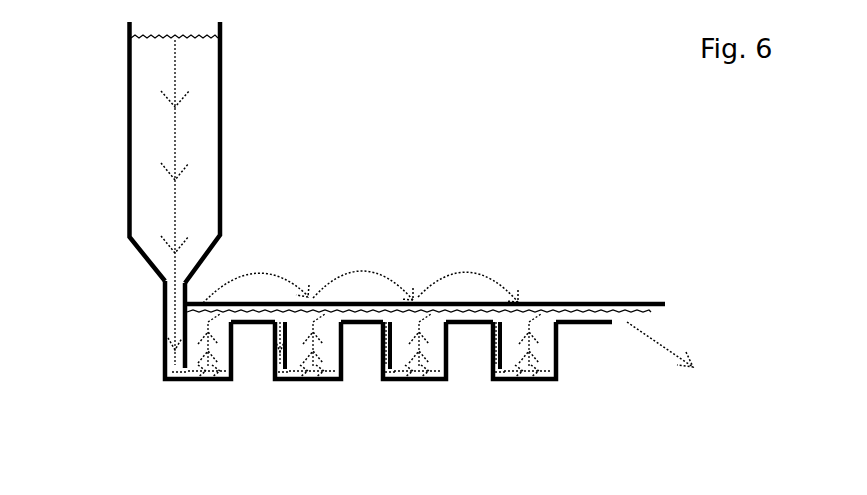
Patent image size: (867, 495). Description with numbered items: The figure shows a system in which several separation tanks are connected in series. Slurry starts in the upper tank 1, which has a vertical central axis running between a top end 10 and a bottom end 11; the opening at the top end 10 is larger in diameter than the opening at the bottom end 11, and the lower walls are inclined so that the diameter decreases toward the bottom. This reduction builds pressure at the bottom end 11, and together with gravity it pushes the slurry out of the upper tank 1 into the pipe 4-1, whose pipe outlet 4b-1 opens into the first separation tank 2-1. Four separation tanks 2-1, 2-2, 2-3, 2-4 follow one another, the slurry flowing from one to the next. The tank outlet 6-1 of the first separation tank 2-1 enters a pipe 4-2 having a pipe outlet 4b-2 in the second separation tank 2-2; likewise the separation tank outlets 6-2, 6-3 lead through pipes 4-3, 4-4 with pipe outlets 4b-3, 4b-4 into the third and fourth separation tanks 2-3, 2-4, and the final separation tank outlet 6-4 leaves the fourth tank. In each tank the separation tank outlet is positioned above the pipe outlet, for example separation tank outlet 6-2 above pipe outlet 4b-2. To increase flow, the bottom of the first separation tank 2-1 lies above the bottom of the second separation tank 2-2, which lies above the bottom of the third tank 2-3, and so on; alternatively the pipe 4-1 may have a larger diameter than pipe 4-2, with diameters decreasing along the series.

The upper tank 1 is at (127, 145).
The top end 10 is at (173, 28).
The bottom end 11 is at (170, 277).
The first separation tank 2-1 is at (192, 340).
The second separation tank 2-2 is at (322, 373).
The third separation tank 2-3 is at (430, 375).
The fourth separation tank 2-4 is at (540, 375).
The pipe 4-1 is at (177, 323).
The pipe 4-2 is at (284, 324).
The pipe 4-3 is at (388, 345).
The pipe 4-4 is at (498, 345).
The pipe outlet 4b-1 is at (170, 372).
The pipe outlet 4b-2 is at (272, 374).
The pipe outlet 4b-3 is at (382, 375).
The pipe outlet 4b-4 is at (493, 377).
The tank outlet 6-1 is at (250, 303).
The separation tank outlet 6-2 is at (360, 303).
The separation tank outlet 6-3 is at (463, 303).
The separation tank outlet 6-4 is at (684, 358).